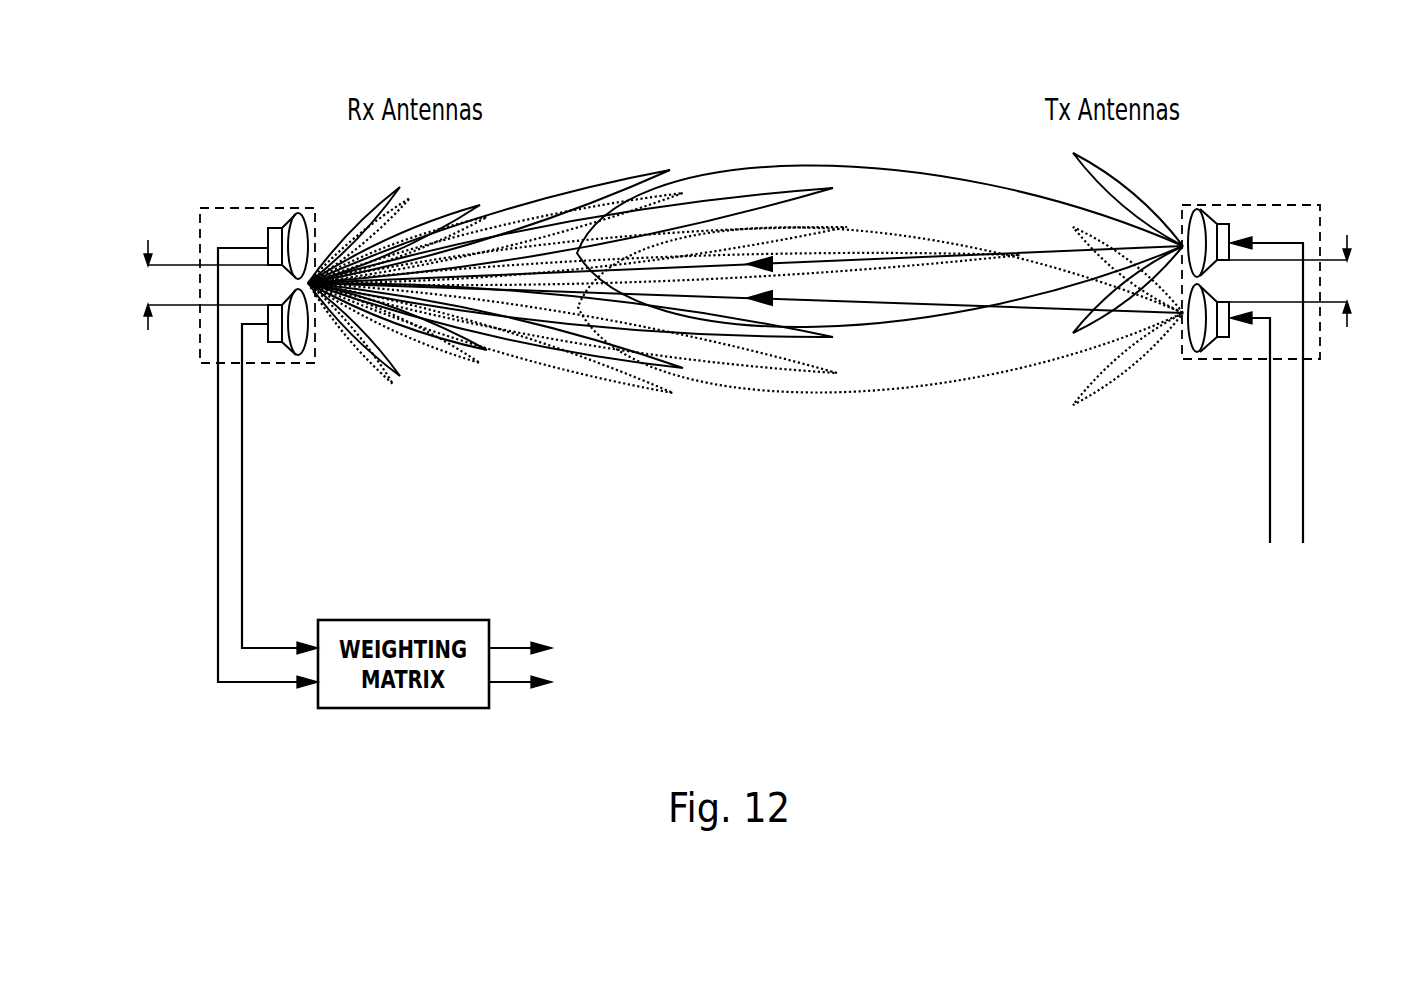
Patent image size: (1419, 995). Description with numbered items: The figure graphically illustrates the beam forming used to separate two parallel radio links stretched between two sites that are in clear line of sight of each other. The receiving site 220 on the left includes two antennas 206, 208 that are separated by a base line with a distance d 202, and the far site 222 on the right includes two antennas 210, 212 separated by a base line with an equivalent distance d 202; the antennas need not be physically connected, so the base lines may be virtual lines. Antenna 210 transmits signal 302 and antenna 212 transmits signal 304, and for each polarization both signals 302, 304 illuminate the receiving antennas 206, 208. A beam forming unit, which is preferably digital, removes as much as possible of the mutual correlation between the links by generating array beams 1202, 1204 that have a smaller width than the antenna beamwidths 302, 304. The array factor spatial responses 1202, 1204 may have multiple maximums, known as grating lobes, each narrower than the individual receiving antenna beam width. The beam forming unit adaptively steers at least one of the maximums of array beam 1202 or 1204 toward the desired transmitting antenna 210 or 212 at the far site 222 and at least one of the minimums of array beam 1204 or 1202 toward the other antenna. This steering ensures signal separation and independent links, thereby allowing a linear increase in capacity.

The distance d 202 is at (747, 282).
The antenna 206 is at (270, 228).
The antenna 208 is at (273, 345).
The antenna 210 is at (1222, 224).
The antenna 212 is at (1222, 337).
The site 220 is at (283, 207).
The site 222 is at (1315, 205).
The signal 302 is at (893, 163).
The signal 304 is at (887, 396).
The array beam 1202 is at (657, 170).
The array beam 1204 is at (613, 386).